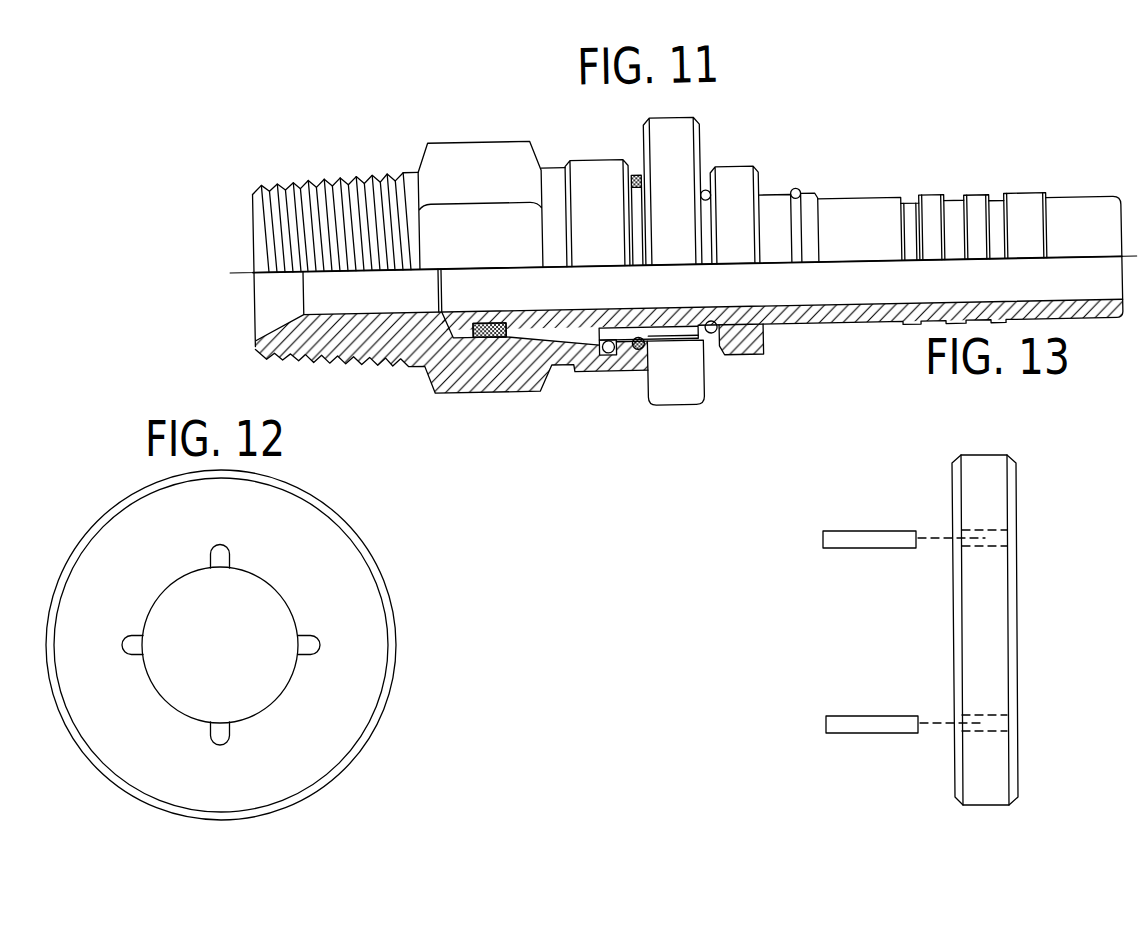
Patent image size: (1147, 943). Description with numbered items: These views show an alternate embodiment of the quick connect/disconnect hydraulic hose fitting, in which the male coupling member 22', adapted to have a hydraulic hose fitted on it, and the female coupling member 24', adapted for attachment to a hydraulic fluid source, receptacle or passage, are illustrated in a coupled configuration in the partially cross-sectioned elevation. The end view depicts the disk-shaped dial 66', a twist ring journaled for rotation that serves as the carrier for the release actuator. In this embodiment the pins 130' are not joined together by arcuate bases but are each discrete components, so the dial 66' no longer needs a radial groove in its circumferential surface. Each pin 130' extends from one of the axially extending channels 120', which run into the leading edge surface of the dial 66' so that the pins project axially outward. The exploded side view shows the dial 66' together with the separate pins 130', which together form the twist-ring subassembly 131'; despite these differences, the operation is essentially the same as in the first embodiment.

In FIG. 11, the female coupling member 24' is at (687, 212).
In FIG. 11, the male coupling member 22' is at (909, 215).
In FIG. 11, the dial 66' is at (672, 191).
In FIG. 12, the dial 66' is at (234, 645).
In FIG. 13, the dial 66' is at (1002, 597).
In FIG. 11, the pins 130' is at (648, 305).
In FIG. 13, the pins 130' is at (904, 605).
In FIG. 11, the channels 120' is at (657, 390).
In FIG. 12, the channels 120' is at (233, 628).
In FIG. 13, the channels 120' is at (1026, 610).
In FIG. 13, the twist-ring subassembly 131' is at (906, 418).